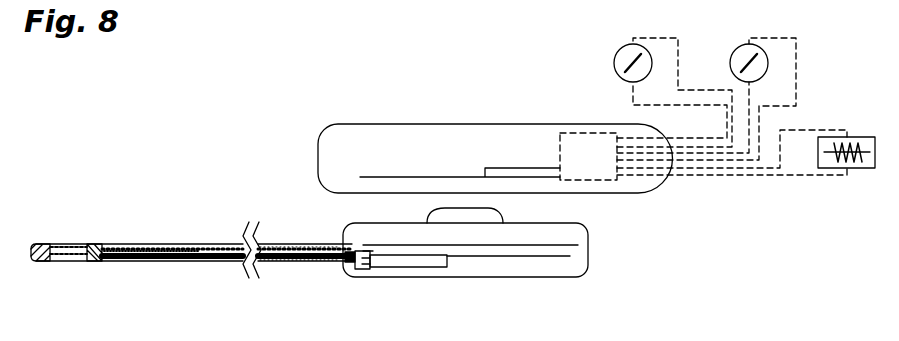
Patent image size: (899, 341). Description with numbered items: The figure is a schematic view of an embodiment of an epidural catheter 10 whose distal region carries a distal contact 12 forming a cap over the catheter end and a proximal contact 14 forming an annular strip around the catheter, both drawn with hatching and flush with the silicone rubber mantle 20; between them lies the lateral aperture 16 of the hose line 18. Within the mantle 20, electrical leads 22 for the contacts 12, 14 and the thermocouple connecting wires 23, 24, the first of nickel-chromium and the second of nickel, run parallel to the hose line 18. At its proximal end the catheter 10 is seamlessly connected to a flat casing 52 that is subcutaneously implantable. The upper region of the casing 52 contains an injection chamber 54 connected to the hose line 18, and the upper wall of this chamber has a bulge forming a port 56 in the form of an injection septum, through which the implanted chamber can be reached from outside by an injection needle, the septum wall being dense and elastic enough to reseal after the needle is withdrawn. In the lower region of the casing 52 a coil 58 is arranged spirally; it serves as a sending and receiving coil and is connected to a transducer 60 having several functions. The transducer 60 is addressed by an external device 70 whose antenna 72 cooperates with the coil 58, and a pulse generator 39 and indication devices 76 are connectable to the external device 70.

The epidural catheter 10 is at (233, 202).
The distal contact 12 is at (38, 261).
The proximal contact 14 is at (95, 261).
The lateral aperture 16 is at (65, 245).
The hose line 18 is at (272, 246).
The mantle 20 is at (272, 262).
The electrical leads 22 is at (137, 262).
The connecting wire 23 is at (117, 251).
The connecting wire 24 is at (152, 254).
The pulse generator 39 is at (867, 137).
The flat casing 52 is at (600, 270).
The injection chamber 54 is at (573, 235).
The port 56 is at (472, 215).
The coil 58 is at (460, 257).
The transducer 60 is at (363, 269).
The external device 70 is at (497, 113).
The antenna 72 is at (427, 177).
The indication devices 76 is at (618, 58).